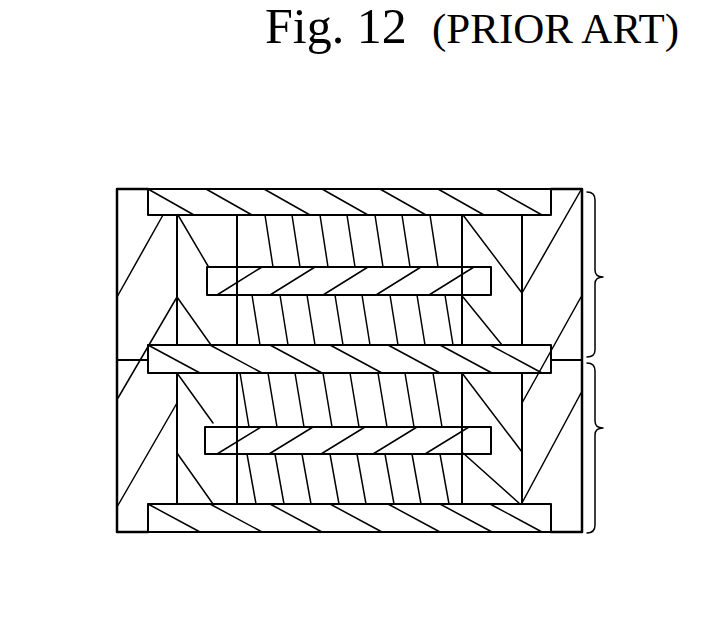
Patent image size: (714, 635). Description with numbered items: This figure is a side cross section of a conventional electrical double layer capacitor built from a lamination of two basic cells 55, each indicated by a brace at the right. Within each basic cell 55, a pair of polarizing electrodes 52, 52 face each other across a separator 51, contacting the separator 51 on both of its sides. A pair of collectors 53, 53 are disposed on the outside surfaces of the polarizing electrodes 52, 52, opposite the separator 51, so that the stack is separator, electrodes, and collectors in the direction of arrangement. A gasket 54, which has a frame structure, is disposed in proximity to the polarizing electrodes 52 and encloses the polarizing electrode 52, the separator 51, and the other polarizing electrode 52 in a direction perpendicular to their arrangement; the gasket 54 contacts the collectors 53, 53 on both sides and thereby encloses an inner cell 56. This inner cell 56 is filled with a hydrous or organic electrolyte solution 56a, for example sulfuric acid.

The separator 51 is at (216, 278).
The polarizing electrode 52 is at (304, 232).
The collector 53 is at (483, 198).
The gasket 54 is at (127, 237).
The basic cell 55 is at (615, 362).
The inner cell 56 is at (502, 237).
The electrolyte solution 56a is at (216, 232).